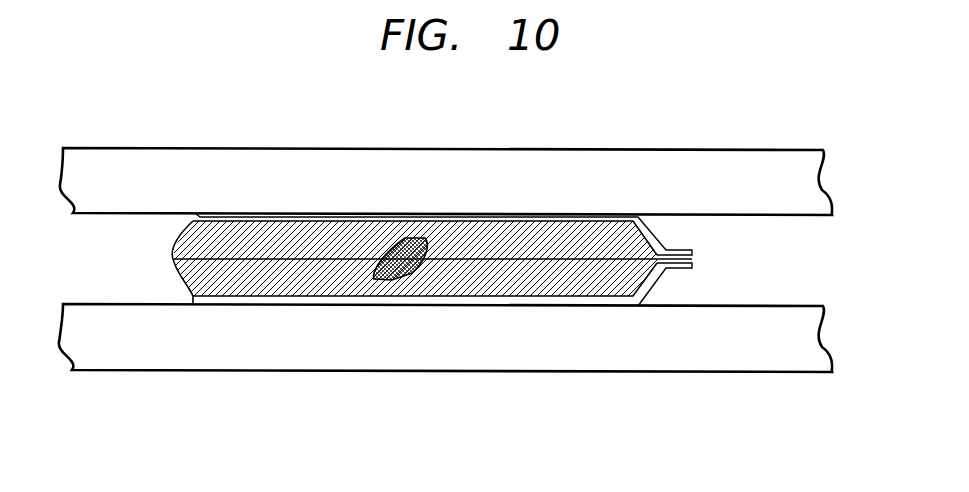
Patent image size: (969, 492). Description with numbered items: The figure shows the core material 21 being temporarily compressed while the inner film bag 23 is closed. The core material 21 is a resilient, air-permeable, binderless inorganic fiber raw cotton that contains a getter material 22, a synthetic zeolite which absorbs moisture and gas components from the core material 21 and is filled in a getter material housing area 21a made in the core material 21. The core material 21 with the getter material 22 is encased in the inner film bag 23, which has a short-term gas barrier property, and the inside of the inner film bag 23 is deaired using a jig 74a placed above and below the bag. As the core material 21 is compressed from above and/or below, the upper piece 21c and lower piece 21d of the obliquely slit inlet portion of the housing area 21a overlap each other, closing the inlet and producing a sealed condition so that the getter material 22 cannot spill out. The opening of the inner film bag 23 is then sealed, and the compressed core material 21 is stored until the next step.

The jig 74a is at (676, 163).
The inner film bag 23 is at (283, 217).
The core material 21 is at (238, 275).
The getter material housing area 21a is at (411, 276).
The upper piece 21c is at (421, 233).
The lower piece 21d is at (442, 234).
The getter material 22 is at (388, 279).